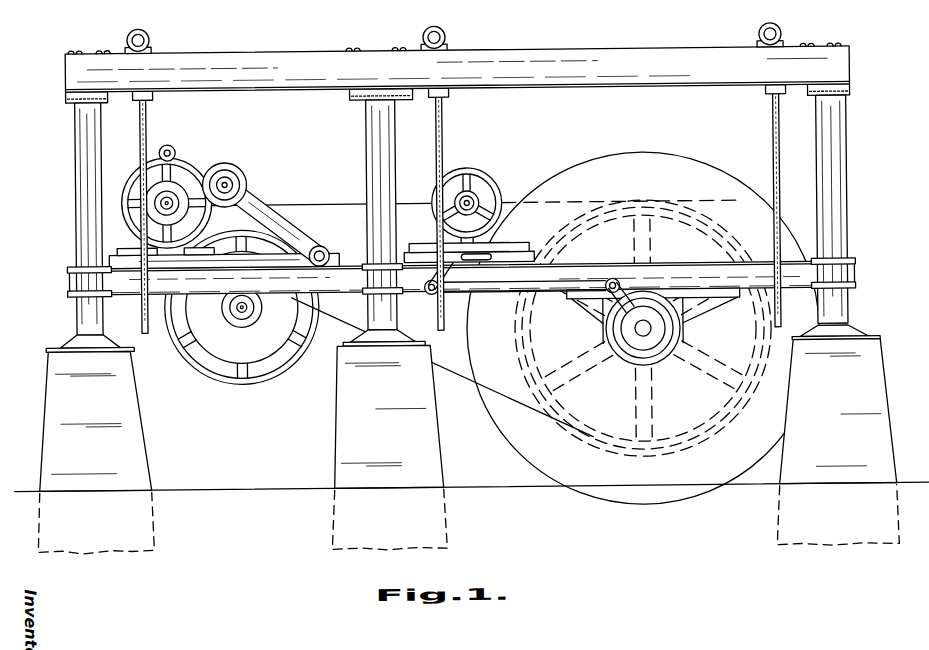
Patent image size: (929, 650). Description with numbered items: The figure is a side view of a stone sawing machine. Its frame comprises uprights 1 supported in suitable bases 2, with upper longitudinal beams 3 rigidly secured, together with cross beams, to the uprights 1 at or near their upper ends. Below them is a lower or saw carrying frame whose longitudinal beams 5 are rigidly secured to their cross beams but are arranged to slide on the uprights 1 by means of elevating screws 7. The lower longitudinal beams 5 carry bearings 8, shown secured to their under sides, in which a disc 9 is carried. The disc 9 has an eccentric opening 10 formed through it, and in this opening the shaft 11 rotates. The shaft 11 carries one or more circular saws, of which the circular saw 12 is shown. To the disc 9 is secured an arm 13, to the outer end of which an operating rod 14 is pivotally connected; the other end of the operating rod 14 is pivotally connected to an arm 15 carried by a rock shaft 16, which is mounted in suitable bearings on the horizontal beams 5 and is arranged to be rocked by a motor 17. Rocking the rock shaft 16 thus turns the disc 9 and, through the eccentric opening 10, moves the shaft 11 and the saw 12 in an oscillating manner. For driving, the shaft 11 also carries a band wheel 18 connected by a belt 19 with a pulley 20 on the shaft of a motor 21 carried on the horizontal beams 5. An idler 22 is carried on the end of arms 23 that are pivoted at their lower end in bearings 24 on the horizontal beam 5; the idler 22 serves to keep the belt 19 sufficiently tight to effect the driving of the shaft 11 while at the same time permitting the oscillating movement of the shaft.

The uprights 1 is at (80, 154).
The bases 2 is at (128, 433).
The upper longitudinal beams 3 is at (505, 67).
The longitudinal beams 5 is at (642, 315).
The elevating screws 7 is at (150, 134).
The bearings 8 is at (604, 313).
The disc 9 is at (620, 331).
The eccentric opening 10 is at (638, 338).
The shaft 11 is at (652, 333).
The circular saw 12 is at (666, 165).
The arms 13 is at (622, 288).
The operating rods 14 is at (504, 294).
The arms 15 is at (440, 266).
The rock shaft 16 is at (479, 255).
The motor 17 is at (487, 200).
The band wheel 18 is at (603, 213).
The belt 19 is at (328, 204).
The pulley 20 is at (177, 189).
The motor 21 is at (197, 172).
The idler 22 is at (246, 170).
The arms 23 is at (265, 214).
The bearings 24 is at (329, 250).